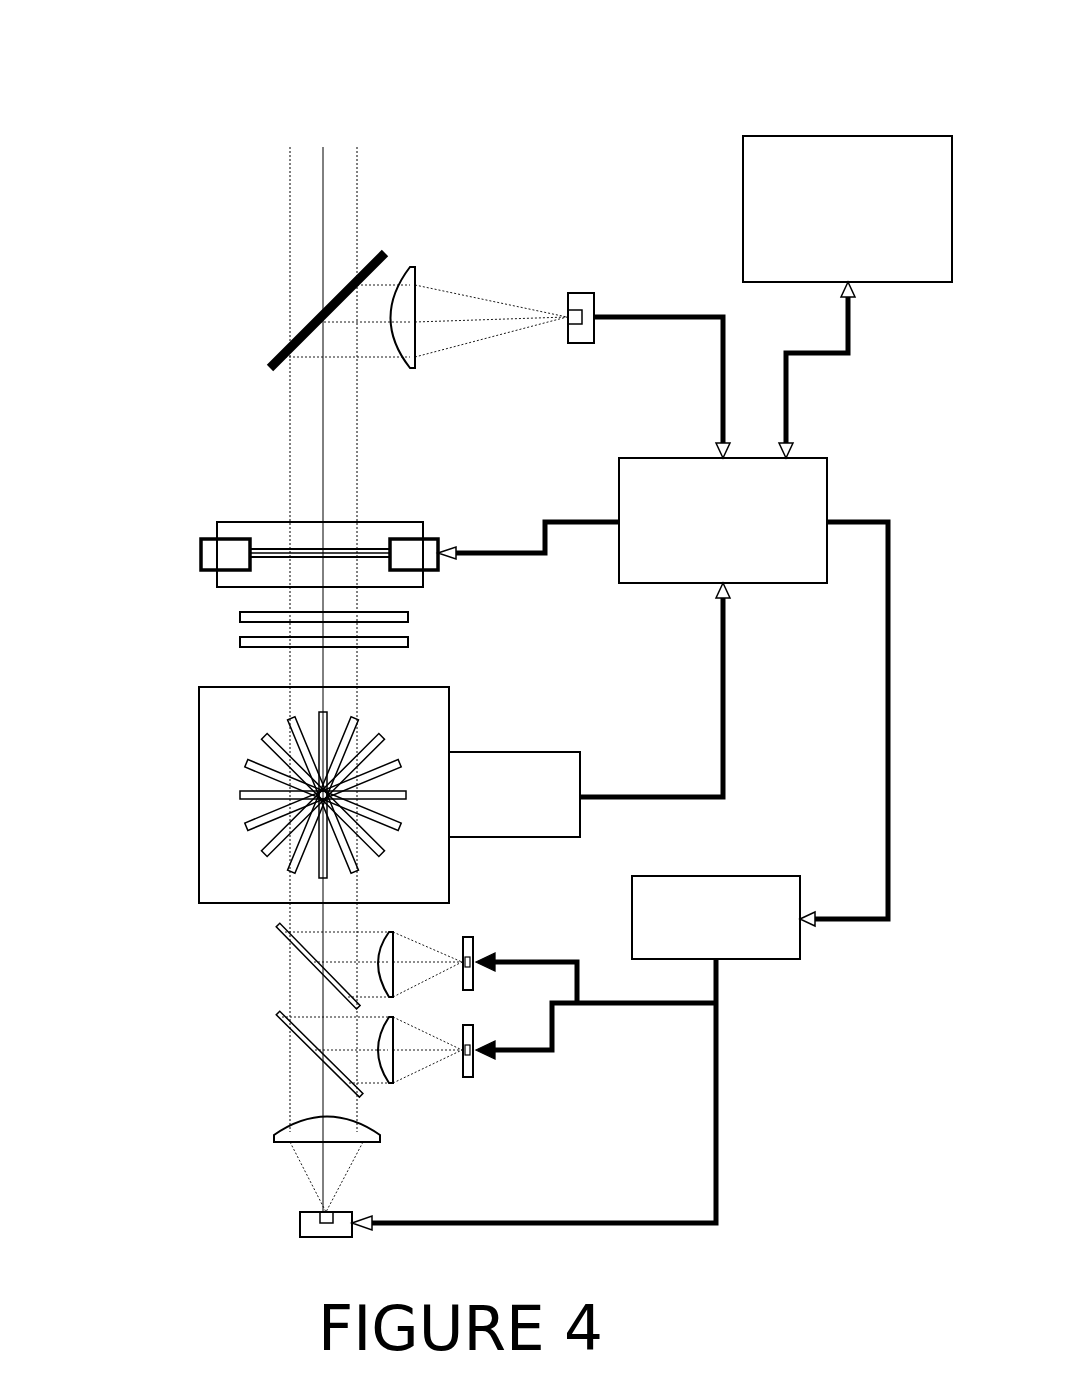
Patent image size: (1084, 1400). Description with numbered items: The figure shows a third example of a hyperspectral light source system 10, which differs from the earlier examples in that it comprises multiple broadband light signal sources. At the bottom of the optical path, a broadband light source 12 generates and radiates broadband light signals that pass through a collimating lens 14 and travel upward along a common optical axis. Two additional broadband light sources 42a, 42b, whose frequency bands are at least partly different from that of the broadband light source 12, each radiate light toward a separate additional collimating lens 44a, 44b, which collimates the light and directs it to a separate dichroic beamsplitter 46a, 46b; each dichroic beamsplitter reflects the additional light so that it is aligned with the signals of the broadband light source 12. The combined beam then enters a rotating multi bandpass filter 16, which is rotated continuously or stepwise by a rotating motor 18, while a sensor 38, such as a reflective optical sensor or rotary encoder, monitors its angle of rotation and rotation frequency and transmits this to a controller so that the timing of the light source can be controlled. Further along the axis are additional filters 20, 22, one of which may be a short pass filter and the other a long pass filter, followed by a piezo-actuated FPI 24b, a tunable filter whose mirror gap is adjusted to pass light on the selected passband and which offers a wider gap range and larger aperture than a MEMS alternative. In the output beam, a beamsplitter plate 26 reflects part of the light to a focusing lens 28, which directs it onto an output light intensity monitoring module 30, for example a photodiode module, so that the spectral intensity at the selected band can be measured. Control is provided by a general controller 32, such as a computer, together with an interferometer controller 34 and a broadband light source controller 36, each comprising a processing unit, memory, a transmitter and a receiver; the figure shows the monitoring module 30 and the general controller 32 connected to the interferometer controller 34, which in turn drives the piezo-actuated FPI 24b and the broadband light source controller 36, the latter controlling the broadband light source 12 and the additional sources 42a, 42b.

The hyperspectral light source system 10 is at (110, 112).
The broadband light source 12 is at (300, 1225).
The collimating lens 14 is at (274, 1137).
The rotating multi bandpass filter 16 is at (239, 795).
The rotating motor 18 is at (199, 722).
The additional filter 20 is at (408, 642).
The additional filter 22 is at (240, 617).
The piezo-actuated FPI 24b is at (201, 548).
The beamsplitter plate 26 is at (270, 360).
The focusing lens 28 is at (415, 270).
The output light intensity monitoring module 30 is at (594, 300).
The general controller 32 is at (870, 232).
The interferometer controller 34 is at (745, 543).
The broadband light source controller 36 is at (738, 940).
The sensor 38 is at (535, 813).
The additional broadband light source 42a is at (473, 1078).
The additional broadband light source 42b is at (607, 923).
The additional collimating lens 44a is at (490, 1132).
The additional collimating lens 44b is at (397, 945).
The dichroic beamsplitter 46a is at (278, 1013).
The dichroic beamsplitter 46b is at (278, 925).